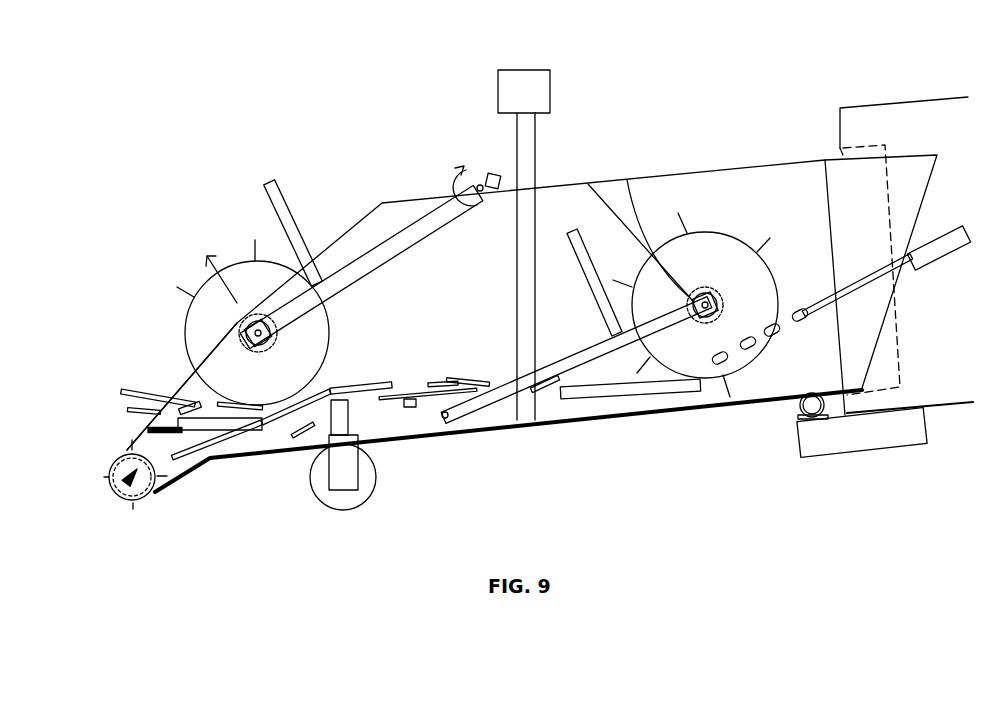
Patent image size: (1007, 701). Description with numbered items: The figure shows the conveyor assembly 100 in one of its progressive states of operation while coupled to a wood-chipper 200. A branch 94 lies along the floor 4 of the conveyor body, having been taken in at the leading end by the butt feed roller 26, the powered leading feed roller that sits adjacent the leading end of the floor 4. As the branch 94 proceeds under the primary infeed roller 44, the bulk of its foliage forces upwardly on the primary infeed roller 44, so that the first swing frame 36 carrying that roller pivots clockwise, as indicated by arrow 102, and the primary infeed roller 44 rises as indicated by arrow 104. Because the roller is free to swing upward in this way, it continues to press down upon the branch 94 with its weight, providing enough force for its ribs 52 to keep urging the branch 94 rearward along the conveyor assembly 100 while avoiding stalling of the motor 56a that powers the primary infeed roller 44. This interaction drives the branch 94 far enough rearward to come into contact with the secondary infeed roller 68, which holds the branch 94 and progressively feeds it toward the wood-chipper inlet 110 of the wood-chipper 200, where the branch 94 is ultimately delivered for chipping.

The floor 4 is at (400, 432).
The butt feed roller 26 is at (126, 483).
The first swing frame 36 is at (343, 268).
The primary infeed roller 44 is at (253, 391).
The ribs 52 is at (180, 380).
The motor 56a is at (276, 336).
The secondary infeed roller 68 is at (756, 299).
The branch 94 is at (405, 402).
The conveyor assembly 100 is at (403, 135).
The arrow 102 is at (494, 208).
The arrow 104 is at (200, 268).
The wood-chipper inlet 110 is at (901, 360).
The wood-chipper 200 is at (904, 92).